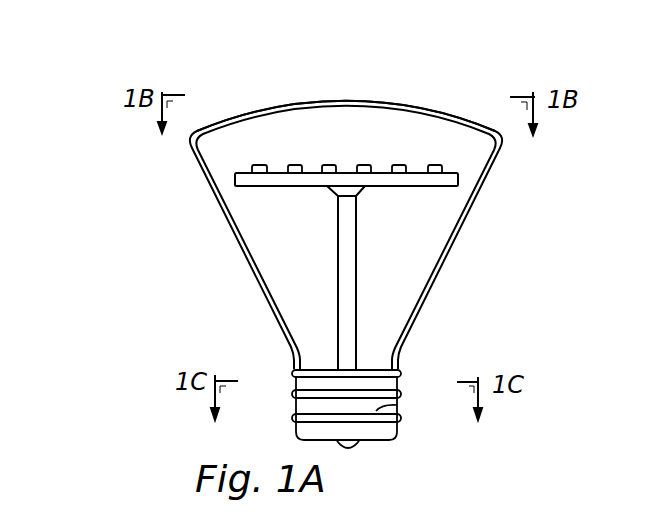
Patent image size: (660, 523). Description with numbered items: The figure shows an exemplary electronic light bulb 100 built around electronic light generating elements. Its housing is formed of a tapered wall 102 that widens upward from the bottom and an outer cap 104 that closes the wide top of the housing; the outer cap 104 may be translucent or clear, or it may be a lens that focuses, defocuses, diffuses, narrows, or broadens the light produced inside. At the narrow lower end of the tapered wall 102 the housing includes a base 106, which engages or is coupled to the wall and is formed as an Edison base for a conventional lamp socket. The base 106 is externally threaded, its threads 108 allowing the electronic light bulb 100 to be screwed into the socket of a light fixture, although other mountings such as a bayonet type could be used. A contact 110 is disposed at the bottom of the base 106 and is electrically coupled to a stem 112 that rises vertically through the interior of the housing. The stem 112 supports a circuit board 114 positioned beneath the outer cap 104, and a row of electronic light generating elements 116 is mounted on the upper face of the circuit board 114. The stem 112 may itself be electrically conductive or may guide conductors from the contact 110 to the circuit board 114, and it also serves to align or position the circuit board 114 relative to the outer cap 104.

The electronic light bulb 100 is at (485, 298).
The tapered wall 102 is at (458, 232).
The outer cap 104 is at (242, 115).
The base 106 is at (296, 408).
The threads 108 is at (397, 405).
The contact 110 is at (350, 448).
The stem 112 is at (357, 243).
The circuit board 114 is at (313, 187).
The electronic light generating elements 116 is at (323, 165).